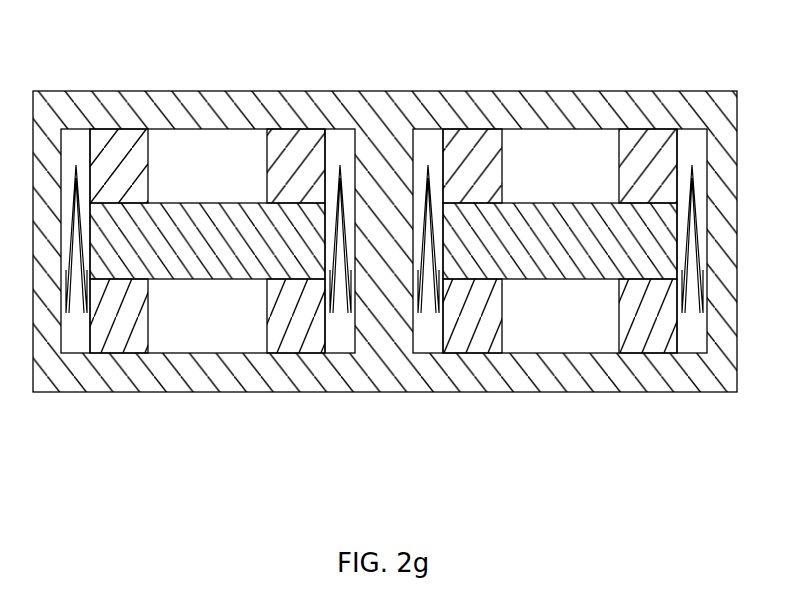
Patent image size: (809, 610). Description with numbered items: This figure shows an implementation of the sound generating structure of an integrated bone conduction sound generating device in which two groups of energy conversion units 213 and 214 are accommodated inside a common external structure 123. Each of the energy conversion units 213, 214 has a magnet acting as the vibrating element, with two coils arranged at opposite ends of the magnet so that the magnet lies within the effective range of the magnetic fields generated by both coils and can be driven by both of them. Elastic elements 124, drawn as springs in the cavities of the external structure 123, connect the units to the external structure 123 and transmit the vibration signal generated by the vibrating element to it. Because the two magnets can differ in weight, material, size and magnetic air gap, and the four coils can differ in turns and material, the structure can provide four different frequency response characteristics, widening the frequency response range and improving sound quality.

The external structure 123 is at (355, 110).
The elastic element 124 is at (686, 166).
The energy conversion unit 213 is at (189, 324).
The energy conversion unit 214 is at (541, 324).